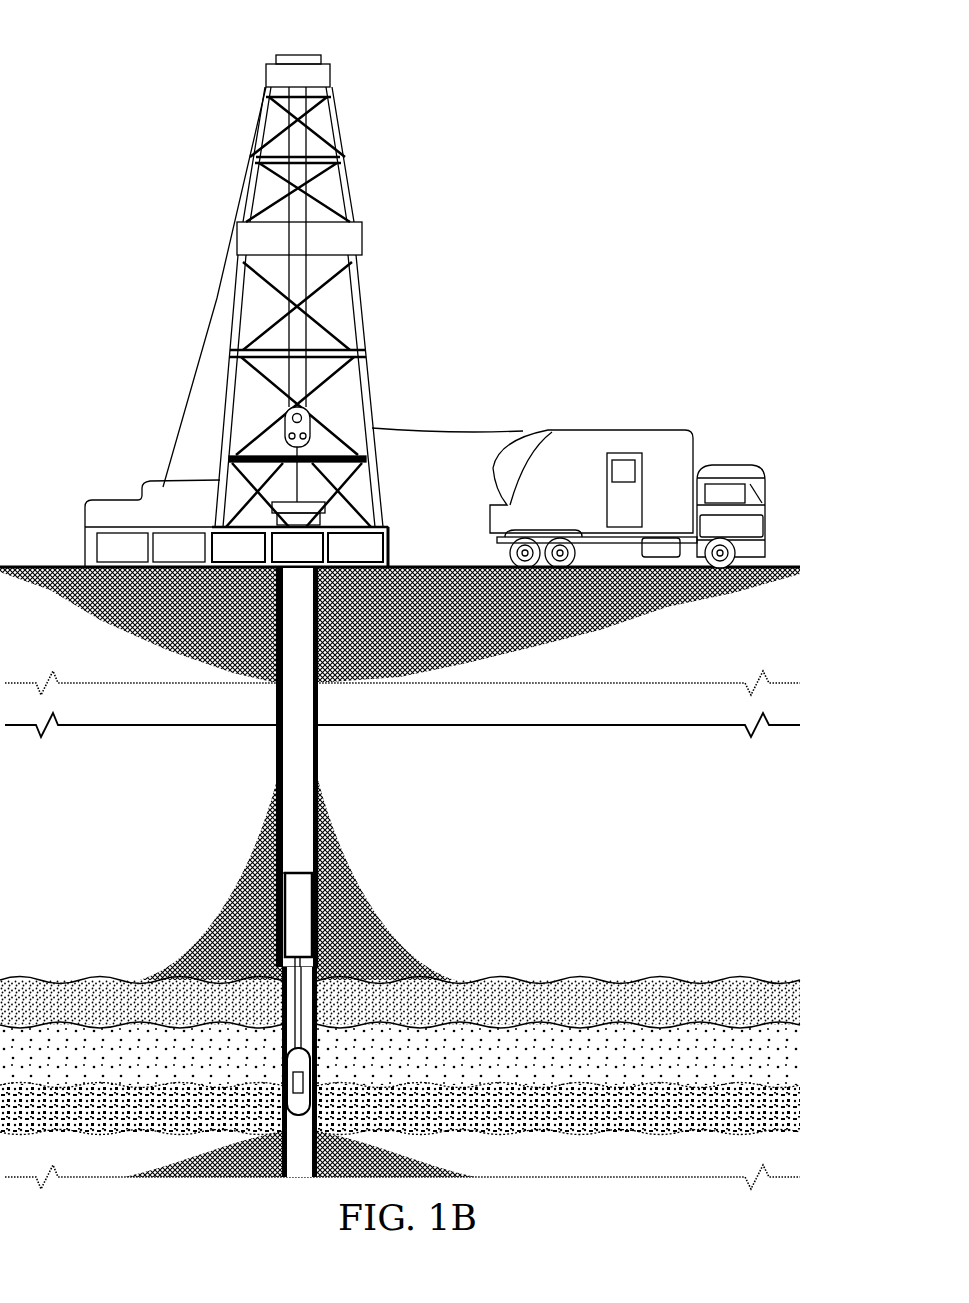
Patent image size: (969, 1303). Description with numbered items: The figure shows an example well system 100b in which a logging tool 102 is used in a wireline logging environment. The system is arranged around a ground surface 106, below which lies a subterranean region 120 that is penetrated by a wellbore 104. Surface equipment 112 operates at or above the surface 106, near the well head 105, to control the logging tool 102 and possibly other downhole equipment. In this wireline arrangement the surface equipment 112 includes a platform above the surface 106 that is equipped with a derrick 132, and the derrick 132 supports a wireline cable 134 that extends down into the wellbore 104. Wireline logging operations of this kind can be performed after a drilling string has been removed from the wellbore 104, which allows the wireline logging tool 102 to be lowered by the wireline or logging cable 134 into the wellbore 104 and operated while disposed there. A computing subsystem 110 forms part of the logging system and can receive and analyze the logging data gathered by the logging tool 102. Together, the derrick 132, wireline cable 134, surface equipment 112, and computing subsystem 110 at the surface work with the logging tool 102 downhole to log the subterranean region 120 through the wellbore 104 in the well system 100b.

The well system 100b is at (400, 602).
The derrick 132 is at (346, 192).
The wireline cable 134 is at (223, 455).
The well head 105 is at (378, 494).
The ground surface 106 is at (435, 565).
The computing subsystem 110 is at (625, 460).
The surface equipment 112 is at (498, 302).
The wellbore 104 is at (277, 745).
The subterranean region 120 is at (498, 838).
The logging tool 102 is at (285, 1070).